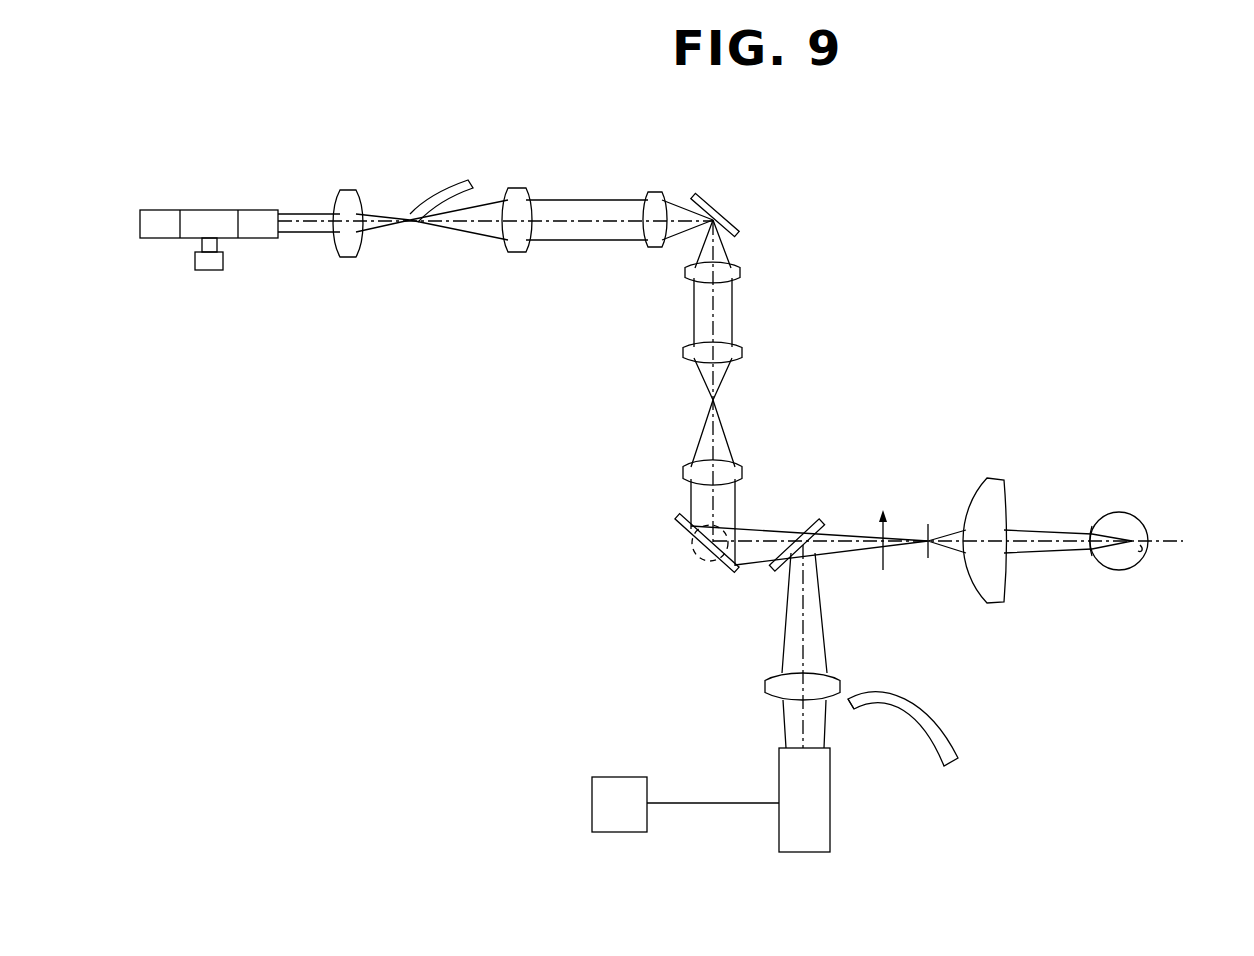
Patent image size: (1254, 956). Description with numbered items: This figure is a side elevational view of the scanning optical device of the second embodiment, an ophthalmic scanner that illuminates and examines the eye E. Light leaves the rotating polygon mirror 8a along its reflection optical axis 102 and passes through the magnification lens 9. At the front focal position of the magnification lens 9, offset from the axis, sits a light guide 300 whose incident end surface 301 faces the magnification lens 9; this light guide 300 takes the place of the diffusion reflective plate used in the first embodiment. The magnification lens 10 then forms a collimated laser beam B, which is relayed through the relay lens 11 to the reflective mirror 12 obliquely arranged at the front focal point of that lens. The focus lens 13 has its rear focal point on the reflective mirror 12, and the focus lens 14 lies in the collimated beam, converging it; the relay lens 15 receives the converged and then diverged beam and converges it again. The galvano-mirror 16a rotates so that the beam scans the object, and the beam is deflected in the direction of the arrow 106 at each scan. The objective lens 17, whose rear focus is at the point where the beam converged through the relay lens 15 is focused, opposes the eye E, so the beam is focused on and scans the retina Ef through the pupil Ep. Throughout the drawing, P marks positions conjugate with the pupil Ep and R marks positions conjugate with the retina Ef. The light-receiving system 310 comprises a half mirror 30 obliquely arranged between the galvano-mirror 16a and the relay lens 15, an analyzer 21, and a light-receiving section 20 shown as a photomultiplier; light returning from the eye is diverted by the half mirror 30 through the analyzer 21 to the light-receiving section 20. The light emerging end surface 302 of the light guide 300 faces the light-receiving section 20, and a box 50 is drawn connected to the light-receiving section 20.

The polygon mirror 8a is at (162, 210).
The reflection optical axis 102 is at (300, 214).
The magnification lens 9 is at (348, 258).
The incident end surface 301 is at (408, 217).
The light guide 300 is at (449, 186).
The magnification lens 10 is at (515, 253).
The laser beam B is at (560, 242).
The relay lens 11 is at (656, 248).
The reflective mirror 12 is at (742, 233).
The focus lens 13 is at (745, 273).
The focus lens 14 is at (745, 352).
The relay lens 15 is at (745, 470).
The galvano-mirror 16a is at (716, 574).
The half mirror 30 is at (818, 520).
The arrow 106 is at (883, 570).
The objective lens 17 is at (995, 604).
The eye E is at (1118, 571).
The pupil Ep is at (1096, 514).
The retina Ef is at (1143, 549).
The light-receiving system 310 is at (763, 654).
The analyzer 21 is at (765, 688).
The light emerging end surface 302 is at (850, 704).
The light-receiving section 20 is at (830, 825).
The signal processing unit 50 is at (625, 777).
The pupil-conjugate position P is at (282, 262).
The retina-conjugate position R is at (410, 260).